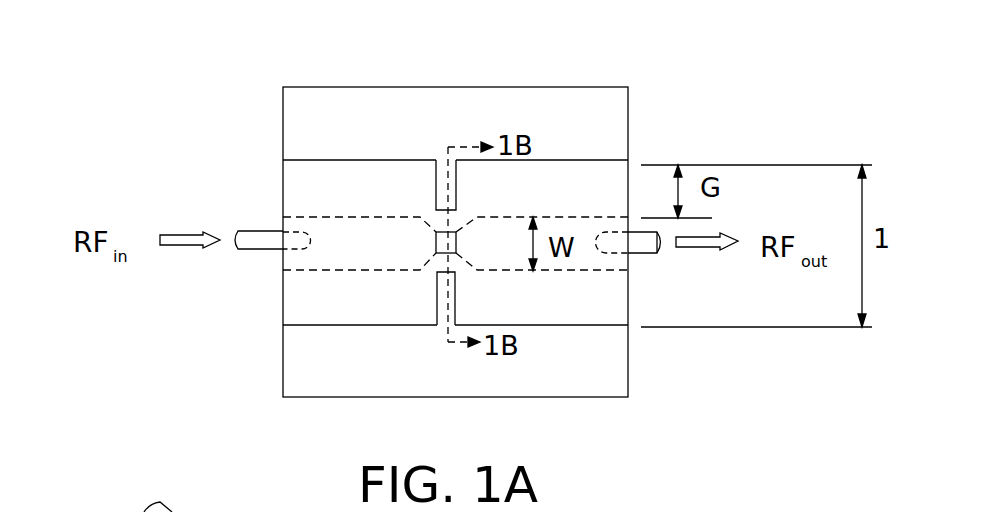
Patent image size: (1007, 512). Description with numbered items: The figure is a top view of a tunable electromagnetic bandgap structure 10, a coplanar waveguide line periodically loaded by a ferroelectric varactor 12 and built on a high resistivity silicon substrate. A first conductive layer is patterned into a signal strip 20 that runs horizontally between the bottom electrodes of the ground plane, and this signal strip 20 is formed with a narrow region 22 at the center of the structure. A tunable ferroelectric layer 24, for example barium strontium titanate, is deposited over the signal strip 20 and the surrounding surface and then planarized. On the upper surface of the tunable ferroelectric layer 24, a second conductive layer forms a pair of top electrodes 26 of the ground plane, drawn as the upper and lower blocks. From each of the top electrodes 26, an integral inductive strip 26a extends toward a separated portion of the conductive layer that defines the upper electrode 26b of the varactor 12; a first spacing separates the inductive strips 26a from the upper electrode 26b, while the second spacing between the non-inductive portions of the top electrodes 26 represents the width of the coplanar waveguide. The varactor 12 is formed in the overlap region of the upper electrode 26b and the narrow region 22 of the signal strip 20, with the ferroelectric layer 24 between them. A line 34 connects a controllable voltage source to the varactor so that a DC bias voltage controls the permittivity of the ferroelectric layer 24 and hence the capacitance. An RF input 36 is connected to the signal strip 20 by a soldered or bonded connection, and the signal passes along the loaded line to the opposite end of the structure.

The TEBG structure 10 is at (160, 68).
The ferroelectric varactor 12 is at (437, 265).
The signal strip 20 is at (320, 272).
The narrow region 22 is at (424, 206).
The tunable ferroelectric layer 24 is at (372, 312).
The top electrodes 26 is at (348, 139).
The inductive strips 26a is at (457, 178).
The upper electrode 26b is at (435, 237).
The line 34 is at (258, 252).
The RF input 36 is at (645, 255).